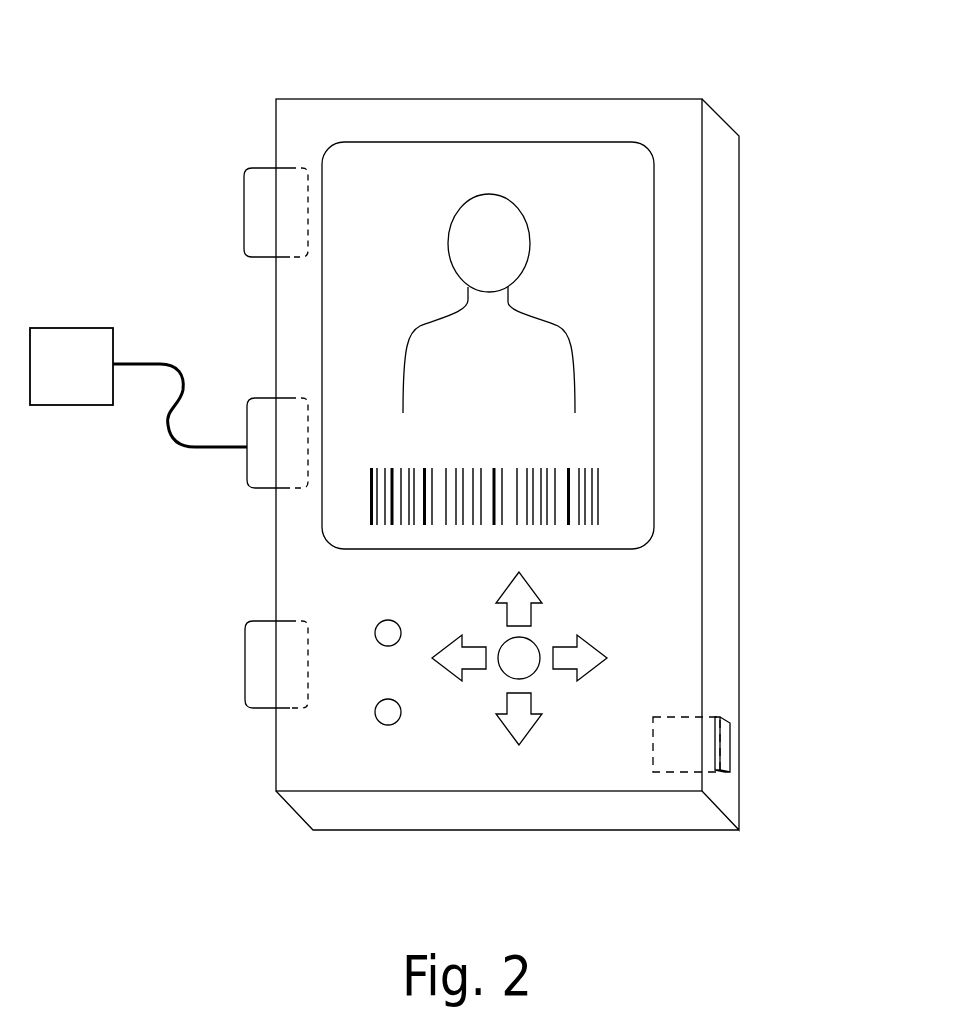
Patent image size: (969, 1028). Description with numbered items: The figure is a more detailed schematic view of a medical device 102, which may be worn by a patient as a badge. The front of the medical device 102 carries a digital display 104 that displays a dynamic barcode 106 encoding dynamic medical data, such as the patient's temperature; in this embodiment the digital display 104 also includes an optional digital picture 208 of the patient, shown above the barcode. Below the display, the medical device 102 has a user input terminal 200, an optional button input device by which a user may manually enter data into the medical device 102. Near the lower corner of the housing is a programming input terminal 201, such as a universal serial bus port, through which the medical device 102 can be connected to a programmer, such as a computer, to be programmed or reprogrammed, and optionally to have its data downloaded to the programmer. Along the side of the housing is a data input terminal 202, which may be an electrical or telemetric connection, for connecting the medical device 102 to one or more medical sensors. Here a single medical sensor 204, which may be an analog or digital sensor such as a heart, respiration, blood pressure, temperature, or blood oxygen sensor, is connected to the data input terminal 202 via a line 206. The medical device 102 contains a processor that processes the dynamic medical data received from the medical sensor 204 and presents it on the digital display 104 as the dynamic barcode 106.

The medical device 102 is at (450, 99).
The digital display 104 is at (654, 202).
The digital picture 208 is at (570, 340).
The dynamic barcode 106 is at (600, 503).
The user input terminal 200 is at (507, 730).
The programming input terminal 201 is at (732, 748).
The data input terminal 202 is at (262, 708).
The medical sensor 204 is at (70, 405).
The line 206 is at (160, 358).